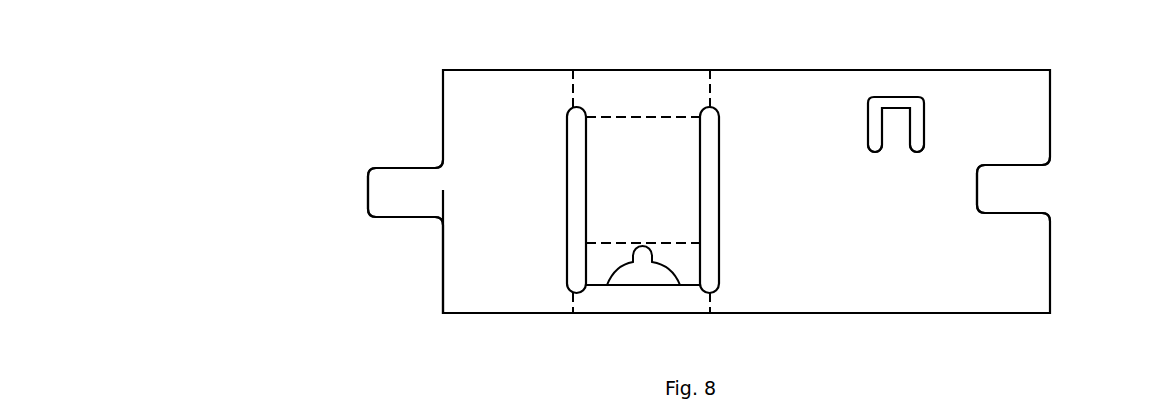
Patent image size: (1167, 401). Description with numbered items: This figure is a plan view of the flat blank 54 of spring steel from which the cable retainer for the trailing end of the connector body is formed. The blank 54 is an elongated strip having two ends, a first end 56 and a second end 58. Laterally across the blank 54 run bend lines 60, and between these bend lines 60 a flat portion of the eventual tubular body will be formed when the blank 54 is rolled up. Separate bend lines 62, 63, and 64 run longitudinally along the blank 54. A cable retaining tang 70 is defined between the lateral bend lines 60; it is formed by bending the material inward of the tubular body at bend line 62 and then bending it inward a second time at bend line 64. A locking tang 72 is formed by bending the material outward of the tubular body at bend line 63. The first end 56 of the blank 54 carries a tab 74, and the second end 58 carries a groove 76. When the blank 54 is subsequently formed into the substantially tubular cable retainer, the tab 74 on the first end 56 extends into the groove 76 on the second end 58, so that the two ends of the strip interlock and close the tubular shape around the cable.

The flat blank 54 is at (333, 175).
The first end 56 is at (440, 268).
The second end 58 is at (1050, 110).
The bend lines 60 is at (570, 90).
The bend line 62 is at (640, 117).
The bend line 63 is at (892, 148).
The bend line 64 is at (677, 242).
The cable retaining tang 70 is at (657, 191).
The locking tang 72 is at (897, 125).
The tab 74 is at (418, 202).
The groove 76 is at (1010, 190).